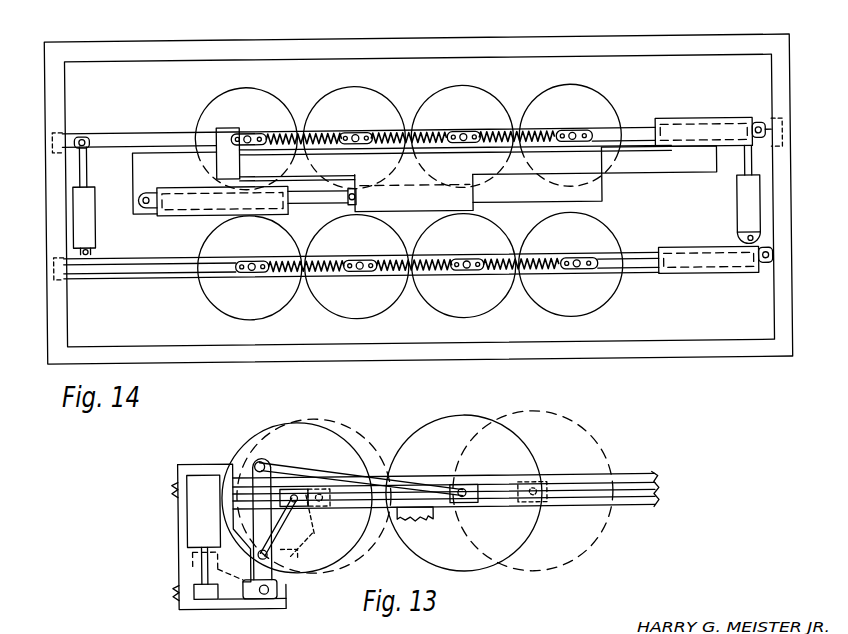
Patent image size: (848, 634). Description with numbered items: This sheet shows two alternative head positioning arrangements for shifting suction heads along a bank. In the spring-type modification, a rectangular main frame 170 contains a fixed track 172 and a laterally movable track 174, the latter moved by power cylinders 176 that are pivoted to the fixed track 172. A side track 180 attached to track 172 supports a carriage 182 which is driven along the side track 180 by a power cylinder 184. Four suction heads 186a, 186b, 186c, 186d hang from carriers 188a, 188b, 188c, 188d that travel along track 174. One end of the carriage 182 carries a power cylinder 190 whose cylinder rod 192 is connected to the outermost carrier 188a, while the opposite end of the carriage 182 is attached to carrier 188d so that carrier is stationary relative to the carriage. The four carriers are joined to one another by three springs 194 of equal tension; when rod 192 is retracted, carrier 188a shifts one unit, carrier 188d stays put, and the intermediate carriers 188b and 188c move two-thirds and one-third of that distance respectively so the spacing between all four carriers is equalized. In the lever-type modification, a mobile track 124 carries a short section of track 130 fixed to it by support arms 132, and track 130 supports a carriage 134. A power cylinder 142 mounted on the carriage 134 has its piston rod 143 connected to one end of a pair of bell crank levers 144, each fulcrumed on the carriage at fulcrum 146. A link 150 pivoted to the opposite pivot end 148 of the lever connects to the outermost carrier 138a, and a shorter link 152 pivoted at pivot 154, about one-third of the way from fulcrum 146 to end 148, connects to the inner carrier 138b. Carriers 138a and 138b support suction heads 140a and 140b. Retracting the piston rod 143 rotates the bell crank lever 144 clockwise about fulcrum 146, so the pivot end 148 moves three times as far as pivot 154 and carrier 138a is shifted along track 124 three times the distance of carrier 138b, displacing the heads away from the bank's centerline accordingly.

In FIG. 14, the main frame 170 is at (522, 31).
In FIG. 14, the fixed track 172 is at (189, 267).
In FIG. 14, the laterally movable track 174 is at (121, 128).
In FIG. 14, the power cylinders 176 is at (96, 229).
In FIG. 14, the side track 180 is at (595, 194).
In FIG. 14, the carriage 182 is at (440, 198).
In FIG. 14, the power cylinder 184 is at (212, 213).
In FIG. 14, the suction head 186a is at (563, 88).
In FIG. 14, the suction head 186b is at (461, 88).
In FIG. 14, the suction head 186c is at (337, 89).
In FIG. 14, the suction head 186d is at (268, 86).
In FIG. 14, the carrier 188a is at (568, 132).
In FIG. 14, the carrier 188b is at (462, 131).
In FIG. 14, the carrier 188c is at (353, 131).
In FIG. 14, the carrier 188d is at (248, 131).
In FIG. 14, the power cylinder 190 is at (690, 120).
In FIG. 14, the cylinder rod 192 is at (626, 127).
In FIG. 14, the springs 194 is at (318, 132).
In FIG. 13, the mobile track 124 is at (622, 476).
In FIG. 13, the short section of track 130 is at (176, 603).
In FIG. 13, the support arms 132 is at (405, 518).
In FIG. 13, the carriage 134 is at (279, 600).
In FIG. 13, the carrier 138a is at (527, 469).
In FIG. 13, the carrier 138b is at (332, 496).
In FIG. 13, the suction head 140a is at (462, 405).
In FIG. 13, the suction head 140b is at (280, 420).
In FIG. 13, the power cylinder 142 is at (188, 485).
In FIG. 13, the piston rod 143 is at (192, 558).
In FIG. 13, the bell crank levers 144 is at (222, 599).
In FIG. 13, the fulcrum 146 is at (277, 600).
In FIG. 13, the pivot end 148 is at (265, 461).
In FIG. 13, the link 150 is at (366, 438).
In FIG. 13, the short link 152 is at (293, 524).
In FIG. 13, the pivot 154 is at (268, 553).